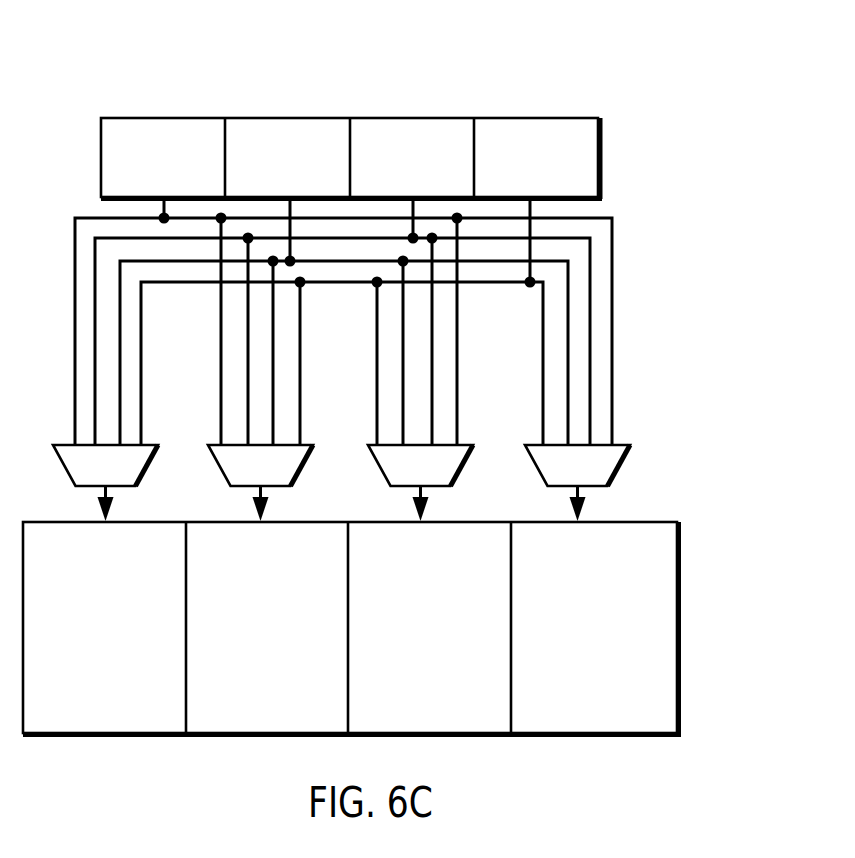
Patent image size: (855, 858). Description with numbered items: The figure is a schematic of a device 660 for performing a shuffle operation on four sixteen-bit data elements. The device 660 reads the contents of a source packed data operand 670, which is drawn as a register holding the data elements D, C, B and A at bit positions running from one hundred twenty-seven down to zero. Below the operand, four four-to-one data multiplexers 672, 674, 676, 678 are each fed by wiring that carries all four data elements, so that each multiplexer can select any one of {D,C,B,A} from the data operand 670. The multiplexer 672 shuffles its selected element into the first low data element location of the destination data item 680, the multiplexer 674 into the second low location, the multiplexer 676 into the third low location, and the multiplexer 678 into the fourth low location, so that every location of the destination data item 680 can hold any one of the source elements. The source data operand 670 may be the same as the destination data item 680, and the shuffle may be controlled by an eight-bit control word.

The device 660 is at (676, 83).
The source packed data operand 670 is at (600, 155).
The four to one data multiplexer 672 is at (622, 443).
The four to one data multiplexer 674 is at (465, 443).
The four to one data multiplexer 676 is at (305, 443).
The four to one data multiplexer 678 is at (150, 443).
The destination data item 680 is at (677, 623).